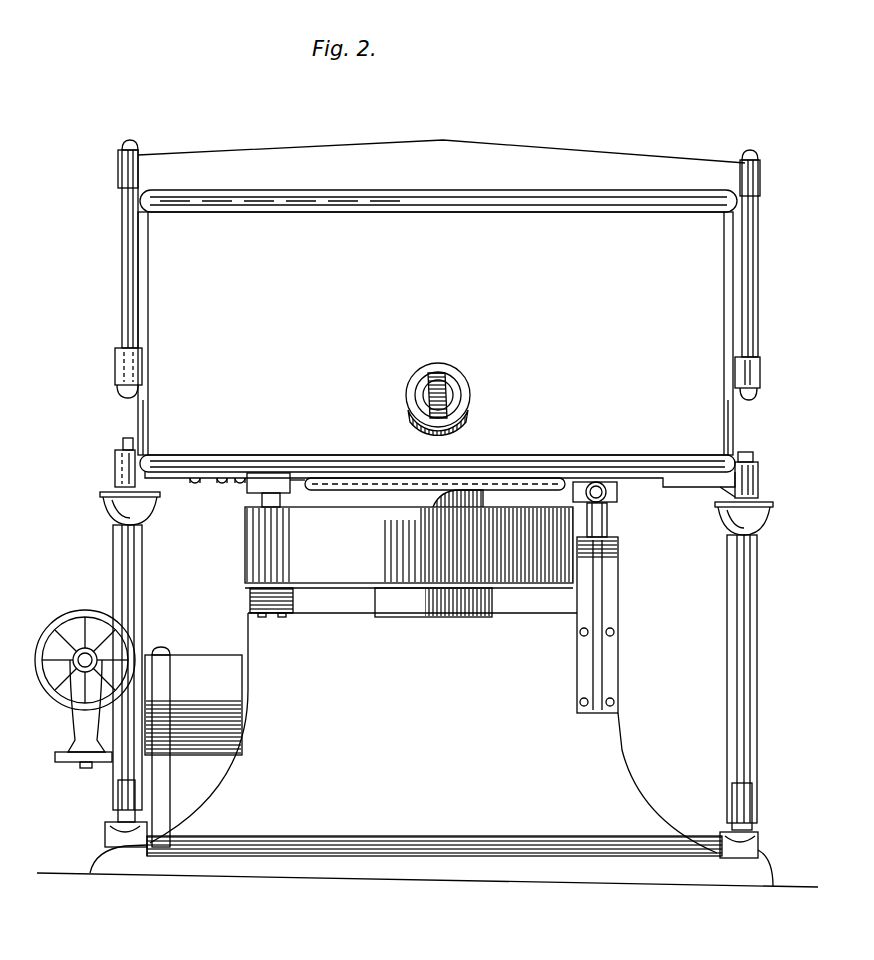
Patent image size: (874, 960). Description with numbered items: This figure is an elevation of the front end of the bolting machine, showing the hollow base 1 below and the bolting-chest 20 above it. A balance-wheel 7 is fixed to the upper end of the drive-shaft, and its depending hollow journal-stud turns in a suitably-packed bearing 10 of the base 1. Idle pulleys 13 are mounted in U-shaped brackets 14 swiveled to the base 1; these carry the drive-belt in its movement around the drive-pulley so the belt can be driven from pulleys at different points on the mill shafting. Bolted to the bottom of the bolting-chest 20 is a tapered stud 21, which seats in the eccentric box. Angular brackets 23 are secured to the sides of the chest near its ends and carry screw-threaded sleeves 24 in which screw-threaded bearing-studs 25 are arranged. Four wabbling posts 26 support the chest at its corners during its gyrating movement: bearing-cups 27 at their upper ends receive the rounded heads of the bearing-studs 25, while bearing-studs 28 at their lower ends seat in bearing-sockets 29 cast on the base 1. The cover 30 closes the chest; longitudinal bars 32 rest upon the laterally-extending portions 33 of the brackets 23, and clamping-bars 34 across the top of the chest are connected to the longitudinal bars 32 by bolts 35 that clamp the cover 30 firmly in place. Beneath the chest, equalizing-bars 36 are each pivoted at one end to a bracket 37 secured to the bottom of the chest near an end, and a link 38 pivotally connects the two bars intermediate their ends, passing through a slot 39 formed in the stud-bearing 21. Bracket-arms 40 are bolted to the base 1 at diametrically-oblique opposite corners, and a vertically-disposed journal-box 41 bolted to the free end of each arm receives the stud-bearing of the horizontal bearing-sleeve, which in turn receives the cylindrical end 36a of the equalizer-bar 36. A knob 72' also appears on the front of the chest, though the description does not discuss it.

The hollow base 1 is at (427, 750).
The balance-wheel 7 is at (409, 547).
The bearing 10 is at (393, 600).
The idle pulleys 13 is at (85, 622).
The U-shaped brackets 14 is at (84, 733).
The bolting-chest 20 is at (435, 333).
The stud 21 is at (435, 505).
The angular brackets 23 is at (142, 428).
The screw-threaded sleeves 24 is at (116, 469).
The screw-threaded bearing-studs 25 is at (752, 457).
The wabbling posts 26 is at (120, 560).
The bearing-cups 27 is at (108, 517).
The bearing-studs 28 is at (118, 816).
The bearing-sockets 29 is at (115, 843).
The cover 30 is at (613, 200).
The longitudinal bars 32 is at (118, 363).
The laterally-extending portions 33 is at (122, 390).
The clamping-bars 34 is at (439, 168).
The bolts 35 is at (122, 293).
The equalizing-bars 36 is at (262, 492).
The cylindrical end 36a is at (602, 492).
The bracket 37 is at (222, 485).
The link 38 is at (302, 488).
The slot 39 is at (360, 490).
The bracket-arms 40 is at (252, 598).
The journal-box 41 is at (607, 525).
The knob 72' is at (452, 393).